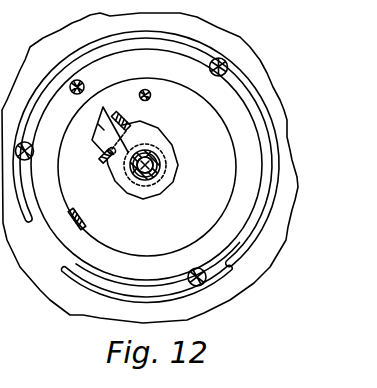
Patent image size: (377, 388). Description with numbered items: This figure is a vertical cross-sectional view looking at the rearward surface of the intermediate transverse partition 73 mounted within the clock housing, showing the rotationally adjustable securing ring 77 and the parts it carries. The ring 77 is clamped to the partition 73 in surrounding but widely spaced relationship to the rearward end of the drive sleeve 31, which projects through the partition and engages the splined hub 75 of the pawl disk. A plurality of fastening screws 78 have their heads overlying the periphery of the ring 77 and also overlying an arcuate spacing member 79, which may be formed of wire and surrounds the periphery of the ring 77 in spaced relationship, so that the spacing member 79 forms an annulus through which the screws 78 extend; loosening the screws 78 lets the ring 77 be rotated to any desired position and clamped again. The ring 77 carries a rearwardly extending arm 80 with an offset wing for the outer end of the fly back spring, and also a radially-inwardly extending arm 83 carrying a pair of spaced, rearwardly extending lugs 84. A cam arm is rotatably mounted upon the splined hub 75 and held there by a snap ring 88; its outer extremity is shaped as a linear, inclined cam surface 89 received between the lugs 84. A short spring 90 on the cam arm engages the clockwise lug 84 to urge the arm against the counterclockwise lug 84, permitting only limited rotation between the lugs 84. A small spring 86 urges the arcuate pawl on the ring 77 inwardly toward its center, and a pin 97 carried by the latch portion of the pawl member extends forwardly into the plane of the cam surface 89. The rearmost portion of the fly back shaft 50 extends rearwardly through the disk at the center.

The partition 73 is at (220, 40).
The fastening screws 78 is at (227, 62).
The small spring 86 is at (78, 82).
The pin 97 is at (147, 90).
The radially-inwardly extending arm 83 is at (102, 108).
The short spring 90 is at (102, 108).
The inclined cam surface 89 is at (98, 124).
The lugs 84 is at (128, 120).
The splined hub 75 is at (160, 152).
The drive sleeve 31 is at (165, 160).
The fly back shaft 50 is at (163, 170).
The snap ring 88 is at (164, 184).
The rearwardly extending arm 80 is at (83, 217).
The arcuate spacing member 79 is at (88, 287).
The securing ring 77 is at (213, 253).